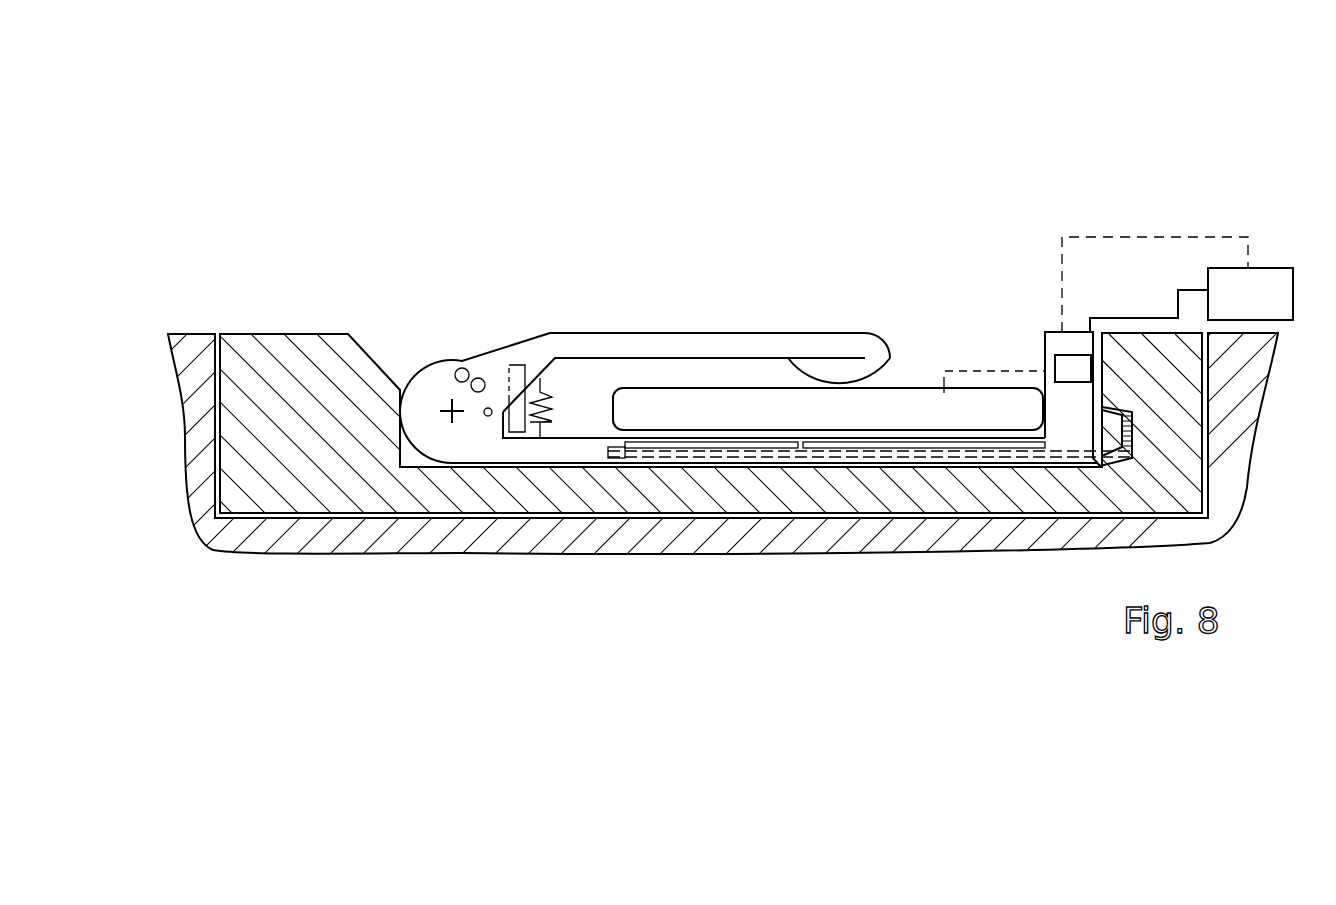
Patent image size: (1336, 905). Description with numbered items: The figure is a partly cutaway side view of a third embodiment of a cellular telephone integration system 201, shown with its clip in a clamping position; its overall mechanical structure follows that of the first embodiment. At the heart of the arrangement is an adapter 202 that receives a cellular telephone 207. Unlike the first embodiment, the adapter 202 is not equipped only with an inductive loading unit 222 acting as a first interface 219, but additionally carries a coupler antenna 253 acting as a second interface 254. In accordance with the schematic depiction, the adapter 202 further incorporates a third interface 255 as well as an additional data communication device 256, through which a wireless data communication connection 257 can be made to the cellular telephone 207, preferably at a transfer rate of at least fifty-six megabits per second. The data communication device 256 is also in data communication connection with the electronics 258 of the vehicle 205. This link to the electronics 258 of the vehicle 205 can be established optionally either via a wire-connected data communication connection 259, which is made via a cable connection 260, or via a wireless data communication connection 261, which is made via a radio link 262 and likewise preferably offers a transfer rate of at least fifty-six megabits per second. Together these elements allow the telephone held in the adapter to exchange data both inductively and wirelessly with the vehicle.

The cellular telephone integration system 201 is at (1022, 242).
The adapter 202 is at (1066, 345).
The vehicle 205 is at (371, 155).
The cellular telephone 207 is at (898, 408).
The first interface 219 is at (685, 442).
The inductive loading unit 222 is at (752, 445).
The coupler antenna 253 is at (913, 445).
The second interface 254 is at (858, 445).
The third interface 255 is at (1071, 395).
The data communication device 256 is at (1062, 372).
The wireless data communication connection 257 is at (993, 371).
The electronics 258 is at (1252, 280).
The wire-connected data communication connection 259 is at (1173, 226).
The cable connection 260 is at (1132, 317).
The wireless data communication connection 261 is at (1178, 246).
The radio link 262 is at (1162, 236).